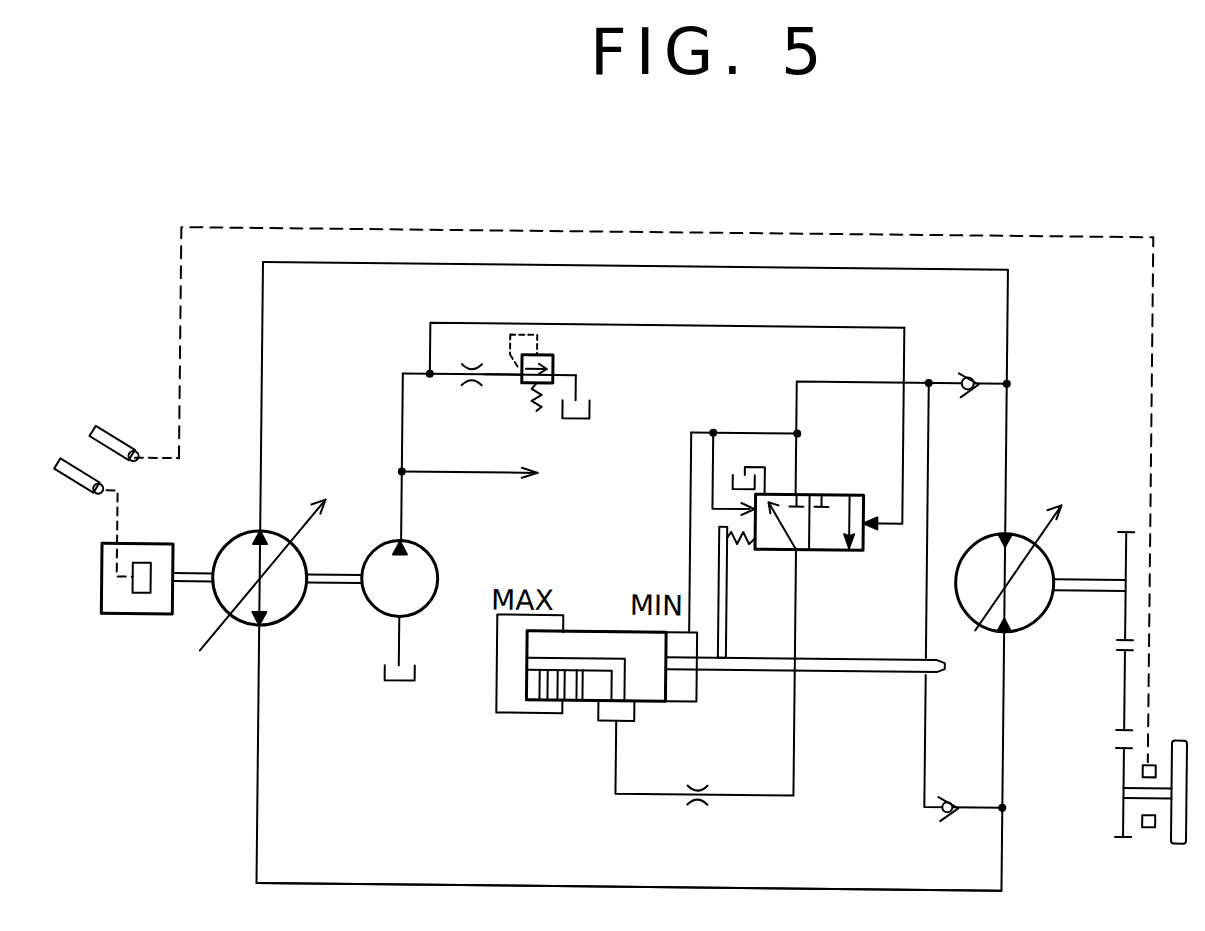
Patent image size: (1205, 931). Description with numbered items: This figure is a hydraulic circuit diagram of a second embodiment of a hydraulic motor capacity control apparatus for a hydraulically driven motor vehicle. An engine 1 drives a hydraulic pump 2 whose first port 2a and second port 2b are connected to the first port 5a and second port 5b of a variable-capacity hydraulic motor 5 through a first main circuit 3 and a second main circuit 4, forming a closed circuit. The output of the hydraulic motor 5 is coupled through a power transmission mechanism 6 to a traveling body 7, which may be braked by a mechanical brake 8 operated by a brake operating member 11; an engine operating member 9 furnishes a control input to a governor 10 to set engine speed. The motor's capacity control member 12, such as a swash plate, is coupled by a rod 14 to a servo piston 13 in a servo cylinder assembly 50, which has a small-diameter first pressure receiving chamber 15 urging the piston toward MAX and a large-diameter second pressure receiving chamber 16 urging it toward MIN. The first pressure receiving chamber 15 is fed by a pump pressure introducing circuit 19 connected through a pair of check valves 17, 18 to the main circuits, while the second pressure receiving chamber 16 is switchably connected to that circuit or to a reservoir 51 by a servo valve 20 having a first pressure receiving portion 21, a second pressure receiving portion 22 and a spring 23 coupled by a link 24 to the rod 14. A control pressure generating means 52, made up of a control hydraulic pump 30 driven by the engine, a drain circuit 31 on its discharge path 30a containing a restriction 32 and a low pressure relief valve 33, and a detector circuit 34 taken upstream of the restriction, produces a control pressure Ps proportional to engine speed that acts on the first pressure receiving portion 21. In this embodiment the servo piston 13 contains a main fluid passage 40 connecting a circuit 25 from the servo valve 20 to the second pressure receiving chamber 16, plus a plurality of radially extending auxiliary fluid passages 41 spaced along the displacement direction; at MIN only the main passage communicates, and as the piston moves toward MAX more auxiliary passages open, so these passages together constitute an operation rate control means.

The engine 1 is at (161, 556).
The hydraulic pump 2 is at (307, 555).
The first port 2a is at (270, 530).
The second port 2b is at (270, 627).
The first main circuit 3 is at (841, 264).
The second main circuit 4 is at (505, 883).
The hydraulic motor 5 is at (975, 548).
The first port 5a is at (1016, 528).
The second port 5b is at (1017, 621).
The power transmission mechanism 6 is at (1129, 672).
The traveling body 7 is at (1186, 832).
The mechanical brake 8 is at (1148, 771).
The engine operating member 9 is at (80, 485).
The governor 10 is at (144, 597).
The brake operating member 11 is at (128, 445).
The capacity control member 12 is at (1027, 554).
The servo piston 13 is at (648, 682).
The rod 14 is at (860, 668).
The first pressure receiving chamber 15 is at (691, 680).
The second pressure receiving chamber 16 is at (509, 688).
The check valve 17 is at (969, 366).
The check valve 18 is at (958, 808).
The pump pressure introducing circuit 19 is at (798, 390).
The servo valve 20 is at (858, 486).
The first pressure receiving portion 21 is at (880, 520).
The second pressure receiving portion 22 is at (740, 506).
The spring 23 is at (738, 538).
The link 24 is at (722, 560).
The circuit 25 is at (777, 790).
The control hydraulic pump 30 is at (428, 570).
The discharge path 30a is at (404, 488).
The drain circuit 31 is at (502, 374).
The restriction 32 is at (473, 384).
The low pressure relief valve 33 is at (556, 358).
The detector circuit 34 is at (430, 345).
The main fluid passage 40 is at (590, 655).
The auxiliary fluid passages 41 is at (565, 672).
The servo cylinder assembly 50 is at (578, 608).
The reservoir 51 is at (404, 682).
The control pressure generating means 52 is at (385, 372).